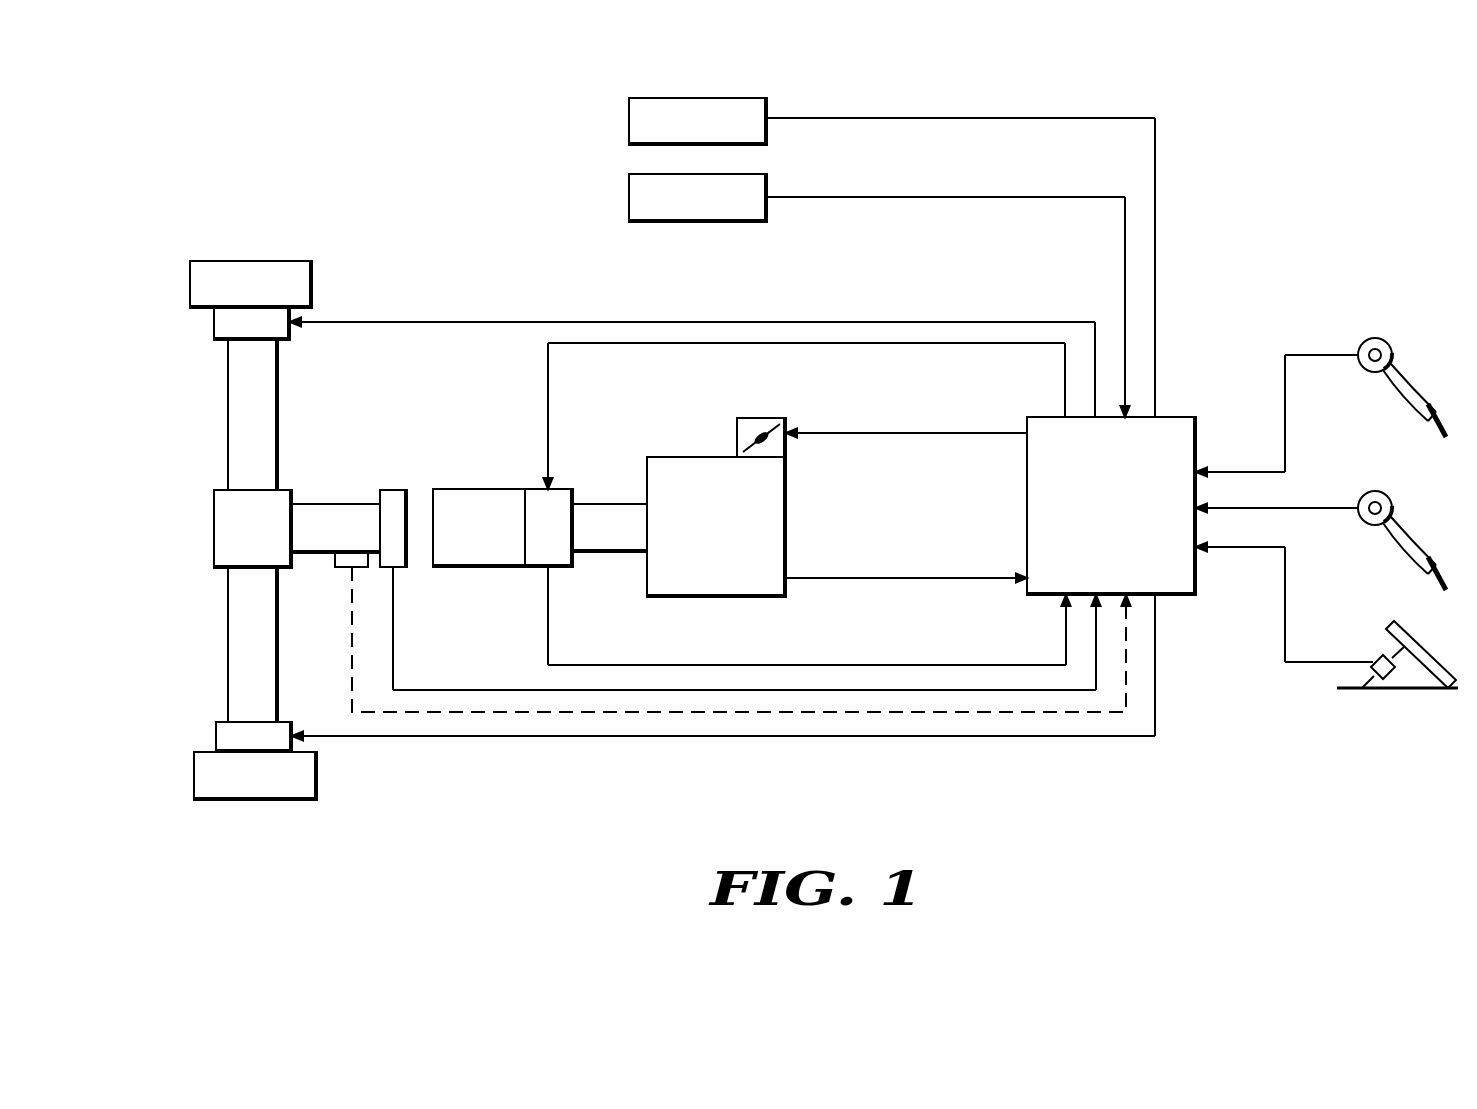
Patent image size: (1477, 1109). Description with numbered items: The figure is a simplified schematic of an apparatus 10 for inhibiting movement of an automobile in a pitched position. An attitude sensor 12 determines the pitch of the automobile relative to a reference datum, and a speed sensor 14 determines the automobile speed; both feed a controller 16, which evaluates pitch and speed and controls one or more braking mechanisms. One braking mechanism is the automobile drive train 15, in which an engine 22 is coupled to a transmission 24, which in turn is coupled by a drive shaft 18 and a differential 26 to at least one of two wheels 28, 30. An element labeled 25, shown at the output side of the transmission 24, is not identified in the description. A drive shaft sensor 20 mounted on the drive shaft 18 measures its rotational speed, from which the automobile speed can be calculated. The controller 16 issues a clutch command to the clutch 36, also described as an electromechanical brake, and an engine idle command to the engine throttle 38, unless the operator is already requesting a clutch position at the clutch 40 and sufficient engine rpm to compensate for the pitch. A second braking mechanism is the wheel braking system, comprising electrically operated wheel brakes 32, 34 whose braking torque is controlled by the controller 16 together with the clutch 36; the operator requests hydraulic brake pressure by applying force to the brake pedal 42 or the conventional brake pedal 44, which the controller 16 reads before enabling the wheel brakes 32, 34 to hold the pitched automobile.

The apparatus 10 is at (839, 826).
The attitude sensor 12 is at (629, 201).
The speed sensor 14 is at (629, 124).
The automobile drive train 15 is at (505, 278).
The controller 16 is at (1027, 507).
The drive shaft 18 is at (336, 506).
The drive shaft sensor 20 is at (341, 568).
The engine 22 is at (786, 525).
The transmission 24 is at (479, 497).
The clutch unit of transmission 25 is at (539, 570).
The differential 26 is at (214, 533).
The wheel 28 is at (194, 776).
The wheel 30 is at (190, 286).
The wheel brake 32 is at (216, 736).
The wheel brake 34 is at (214, 324).
The clutch (electromechanical brake) 36 is at (393, 492).
The engine throttle 38 is at (737, 437).
The clutch 40 is at (1390, 501).
The brake pedal 42 is at (1428, 656).
The conventional brake pedal 44 is at (1390, 348).